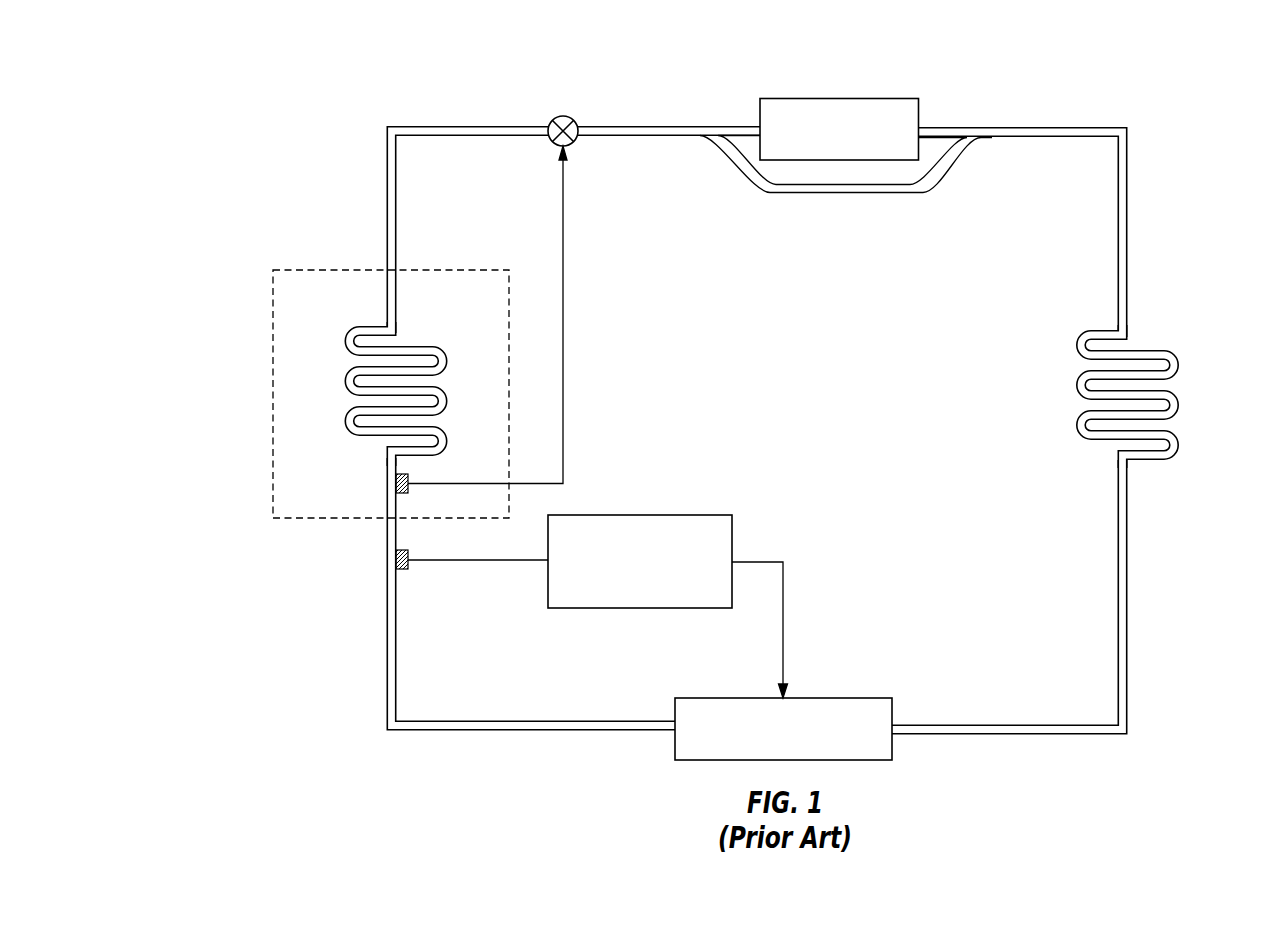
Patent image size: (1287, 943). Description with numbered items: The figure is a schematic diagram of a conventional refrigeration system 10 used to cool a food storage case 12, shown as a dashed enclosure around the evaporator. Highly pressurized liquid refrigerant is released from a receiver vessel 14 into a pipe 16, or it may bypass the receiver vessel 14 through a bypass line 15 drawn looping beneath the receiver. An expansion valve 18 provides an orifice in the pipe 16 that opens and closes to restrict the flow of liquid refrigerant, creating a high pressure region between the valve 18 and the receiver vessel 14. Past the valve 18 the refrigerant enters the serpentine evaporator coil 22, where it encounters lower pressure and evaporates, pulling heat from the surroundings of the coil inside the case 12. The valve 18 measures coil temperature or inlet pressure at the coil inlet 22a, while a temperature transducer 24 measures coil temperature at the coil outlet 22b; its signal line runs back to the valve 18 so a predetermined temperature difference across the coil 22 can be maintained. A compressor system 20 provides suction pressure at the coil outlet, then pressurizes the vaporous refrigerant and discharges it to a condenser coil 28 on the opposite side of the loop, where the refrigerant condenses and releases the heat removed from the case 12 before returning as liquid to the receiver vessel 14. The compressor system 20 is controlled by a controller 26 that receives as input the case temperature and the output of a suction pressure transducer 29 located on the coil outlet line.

The refrigeration system 10 is at (1020, 103).
The food storage case 12 is at (314, 306).
The receiver vessel 14 is at (848, 97).
The bypass line 15 is at (875, 195).
The pipe 16 is at (687, 126).
The expansion valve 18 is at (555, 117).
The compressor system 20 is at (837, 697).
The evaporator coil 22 is at (355, 397).
The coil inlet 22a is at (398, 215).
The coil outlet 22b is at (397, 641).
The temperature transducer 24 is at (408, 476).
The controller 26 is at (637, 514).
The condenser coil 28 is at (1170, 393).
The suction pressure transducer 29 is at (410, 570).